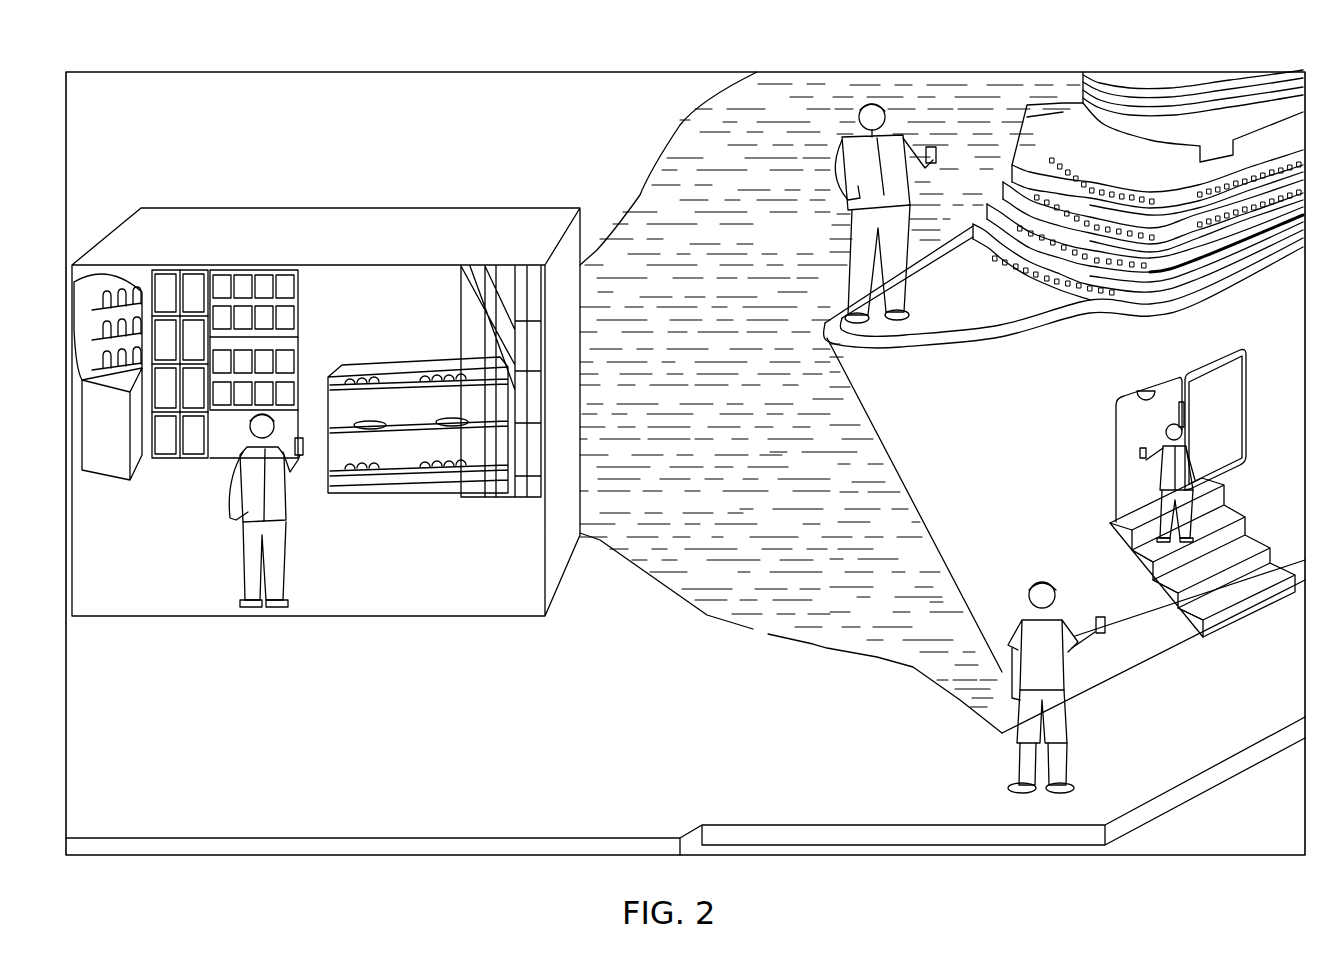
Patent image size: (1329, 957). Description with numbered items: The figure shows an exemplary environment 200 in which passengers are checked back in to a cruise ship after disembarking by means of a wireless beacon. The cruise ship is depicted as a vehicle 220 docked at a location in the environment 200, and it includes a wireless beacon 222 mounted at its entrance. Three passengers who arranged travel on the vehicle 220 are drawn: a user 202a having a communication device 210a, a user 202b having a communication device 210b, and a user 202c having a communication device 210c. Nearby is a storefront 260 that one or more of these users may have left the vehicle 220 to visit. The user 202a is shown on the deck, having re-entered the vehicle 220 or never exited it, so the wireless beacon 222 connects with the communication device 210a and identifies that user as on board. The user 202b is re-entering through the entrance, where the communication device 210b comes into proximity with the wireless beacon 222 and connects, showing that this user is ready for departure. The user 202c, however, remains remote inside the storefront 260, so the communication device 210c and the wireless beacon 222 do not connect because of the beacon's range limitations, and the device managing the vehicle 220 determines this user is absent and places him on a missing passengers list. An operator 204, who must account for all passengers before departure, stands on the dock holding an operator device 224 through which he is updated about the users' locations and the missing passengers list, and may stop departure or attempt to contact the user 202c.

The environment 200 is at (704, 52).
The user 202a is at (868, 231).
The user 202b is at (1187, 510).
The user 202c is at (255, 490).
The operator 204 is at (1070, 732).
The communication device 210a is at (932, 157).
The communication device 210b is at (1140, 452).
The communication device 210c is at (302, 458).
The vehicle 220 is at (975, 301).
The wireless beacon 222 is at (1138, 388).
The operator device 224 is at (1101, 615).
The storefront 260 is at (410, 338).